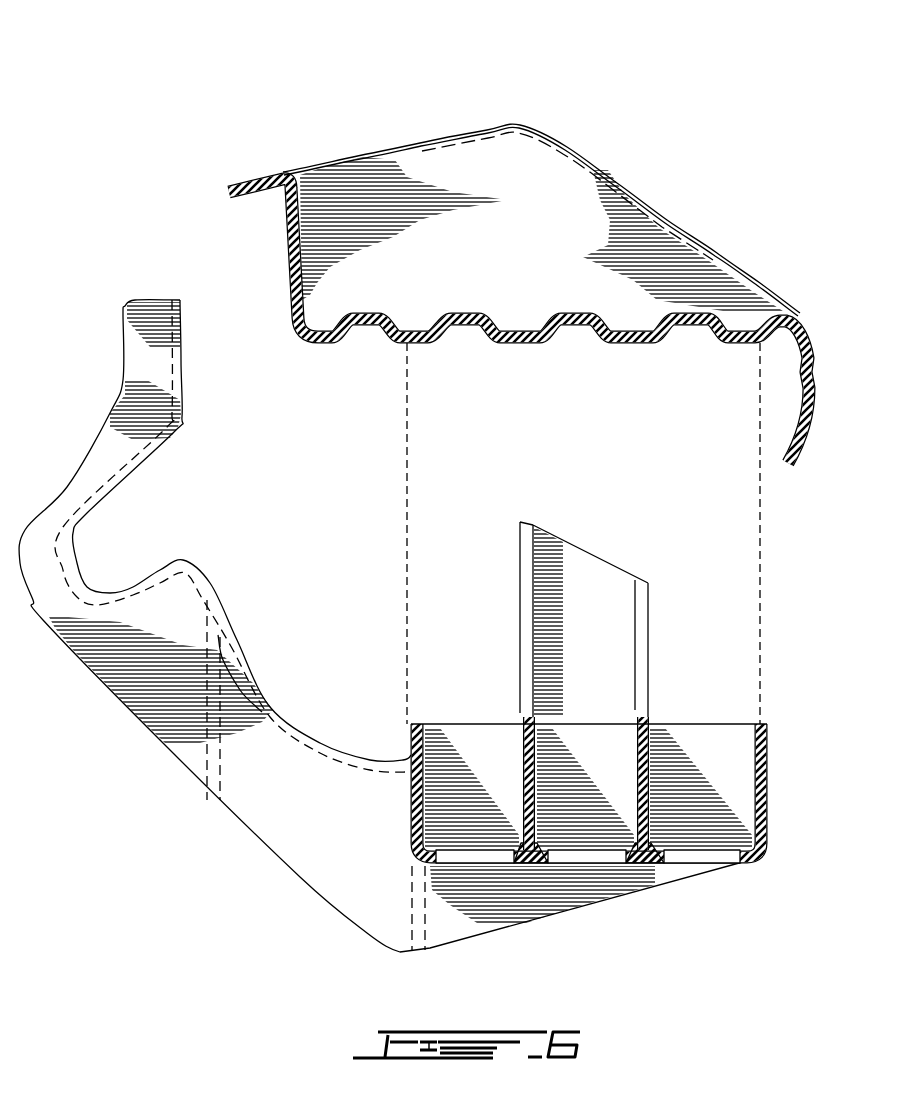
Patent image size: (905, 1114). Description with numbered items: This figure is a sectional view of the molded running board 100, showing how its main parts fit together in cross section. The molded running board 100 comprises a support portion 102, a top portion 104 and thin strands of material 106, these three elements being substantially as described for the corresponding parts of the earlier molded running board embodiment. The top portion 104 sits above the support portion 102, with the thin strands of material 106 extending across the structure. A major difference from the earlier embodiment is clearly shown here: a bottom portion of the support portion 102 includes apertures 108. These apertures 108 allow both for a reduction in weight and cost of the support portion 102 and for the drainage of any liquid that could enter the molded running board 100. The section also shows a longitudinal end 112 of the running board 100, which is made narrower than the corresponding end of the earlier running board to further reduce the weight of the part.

The molded running board 100 is at (108, 176).
The support portion 102 is at (467, 937).
The top portion 104 is at (818, 323).
The thin strands of material 106 is at (756, 428).
The apertures 108 is at (477, 857).
The longitudinal end 112 is at (648, 623).